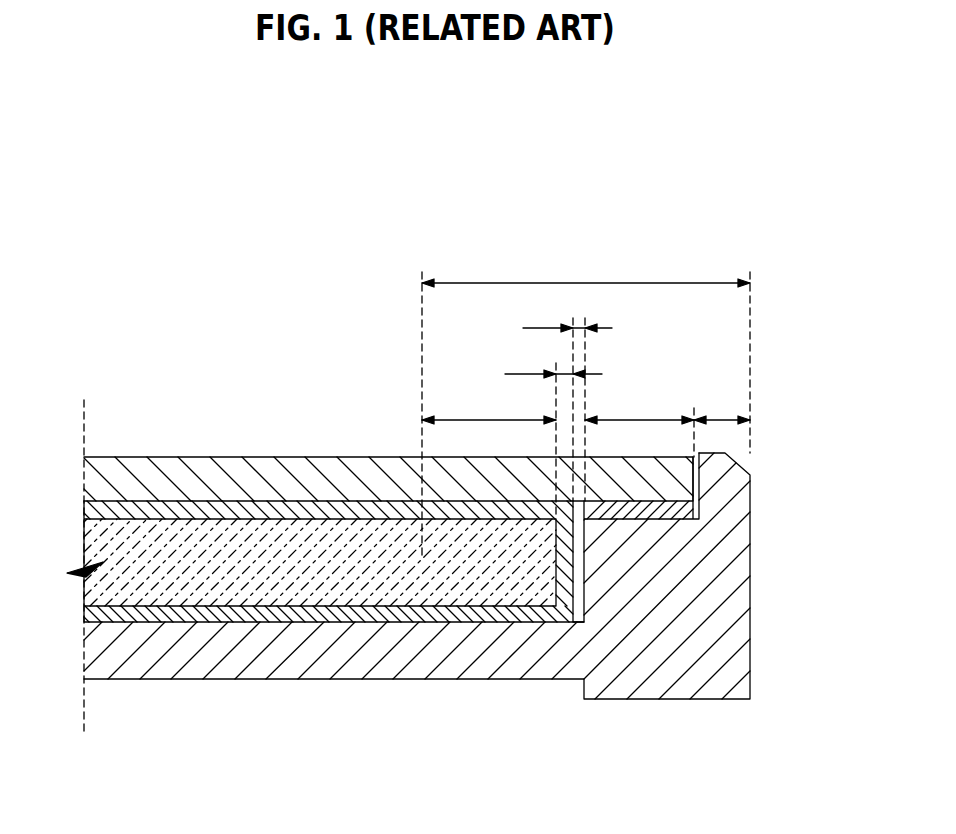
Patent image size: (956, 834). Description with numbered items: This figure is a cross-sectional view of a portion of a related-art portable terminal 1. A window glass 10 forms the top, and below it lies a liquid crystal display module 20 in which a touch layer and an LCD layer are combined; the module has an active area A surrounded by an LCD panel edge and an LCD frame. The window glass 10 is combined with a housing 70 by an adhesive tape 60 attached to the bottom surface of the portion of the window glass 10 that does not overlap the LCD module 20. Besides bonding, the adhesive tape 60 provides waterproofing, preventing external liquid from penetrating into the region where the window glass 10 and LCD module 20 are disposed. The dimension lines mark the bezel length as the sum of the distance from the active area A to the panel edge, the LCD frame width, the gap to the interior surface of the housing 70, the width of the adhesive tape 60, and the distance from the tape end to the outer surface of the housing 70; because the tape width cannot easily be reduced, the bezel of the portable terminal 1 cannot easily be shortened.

The portable terminal 1 is at (407, 132).
The window glass 10 is at (165, 445).
The liquid crystal display (LCD) module 20 is at (284, 505).
The adhesive tape 60 is at (690, 510).
The housing 70 is at (248, 700).
The active area A is at (311, 562).